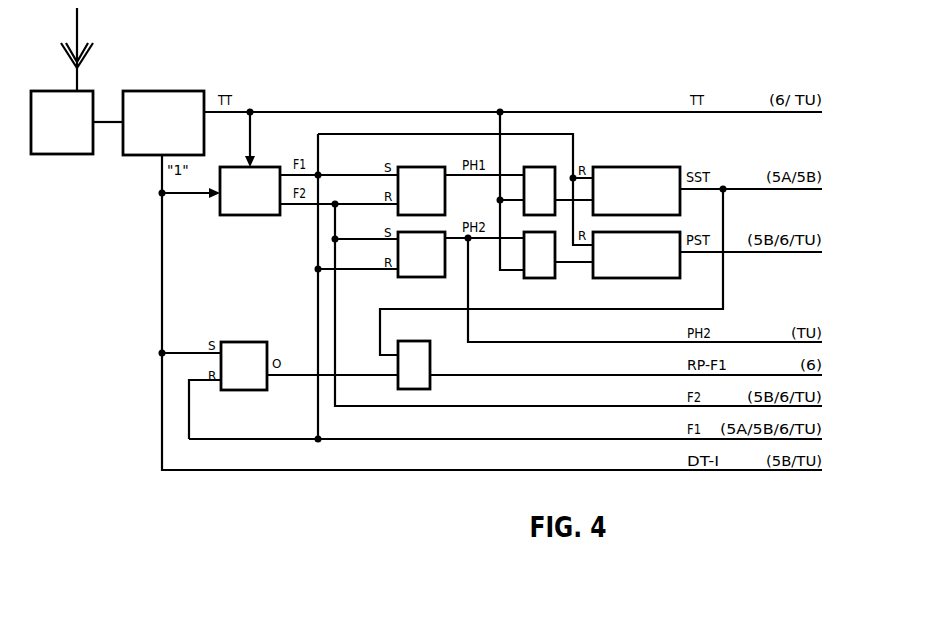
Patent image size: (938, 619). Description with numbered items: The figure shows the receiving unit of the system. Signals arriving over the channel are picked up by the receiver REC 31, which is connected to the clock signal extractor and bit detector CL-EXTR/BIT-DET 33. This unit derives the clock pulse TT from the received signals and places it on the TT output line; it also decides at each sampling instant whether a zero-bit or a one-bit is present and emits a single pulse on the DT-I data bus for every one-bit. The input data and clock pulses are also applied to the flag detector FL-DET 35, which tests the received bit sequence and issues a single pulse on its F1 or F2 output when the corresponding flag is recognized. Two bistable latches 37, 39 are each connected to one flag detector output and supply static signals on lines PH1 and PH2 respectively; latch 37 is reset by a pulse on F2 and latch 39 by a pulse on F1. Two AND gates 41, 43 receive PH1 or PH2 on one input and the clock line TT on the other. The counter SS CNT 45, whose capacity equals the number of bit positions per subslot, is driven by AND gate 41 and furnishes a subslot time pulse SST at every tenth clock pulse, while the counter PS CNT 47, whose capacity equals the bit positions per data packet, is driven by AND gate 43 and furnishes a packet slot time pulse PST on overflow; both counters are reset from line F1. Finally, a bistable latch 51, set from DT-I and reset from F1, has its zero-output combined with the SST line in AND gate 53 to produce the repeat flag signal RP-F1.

The receiver 31 is at (55, 155).
The clock signal extractor and bit detector 33 is at (148, 155).
The flag detector 35 is at (245, 216).
The bistable latch 37 is at (420, 167).
The bistable latch 39 is at (420, 277).
The AND gate 41 is at (531, 167).
The AND gate 43 is at (530, 278).
The counter SS CNT 45 is at (653, 167).
The counter PS CNT 47 is at (652, 278).
The bistable latch 51 is at (240, 342).
The AND gate 53 is at (420, 341).